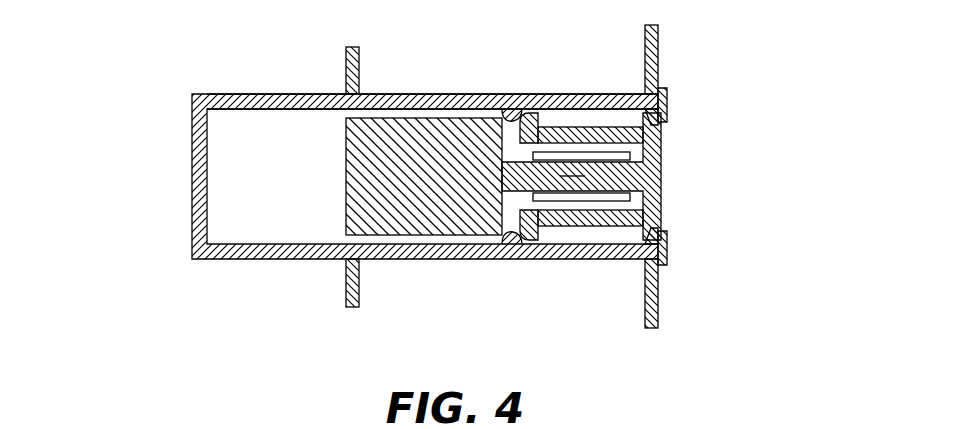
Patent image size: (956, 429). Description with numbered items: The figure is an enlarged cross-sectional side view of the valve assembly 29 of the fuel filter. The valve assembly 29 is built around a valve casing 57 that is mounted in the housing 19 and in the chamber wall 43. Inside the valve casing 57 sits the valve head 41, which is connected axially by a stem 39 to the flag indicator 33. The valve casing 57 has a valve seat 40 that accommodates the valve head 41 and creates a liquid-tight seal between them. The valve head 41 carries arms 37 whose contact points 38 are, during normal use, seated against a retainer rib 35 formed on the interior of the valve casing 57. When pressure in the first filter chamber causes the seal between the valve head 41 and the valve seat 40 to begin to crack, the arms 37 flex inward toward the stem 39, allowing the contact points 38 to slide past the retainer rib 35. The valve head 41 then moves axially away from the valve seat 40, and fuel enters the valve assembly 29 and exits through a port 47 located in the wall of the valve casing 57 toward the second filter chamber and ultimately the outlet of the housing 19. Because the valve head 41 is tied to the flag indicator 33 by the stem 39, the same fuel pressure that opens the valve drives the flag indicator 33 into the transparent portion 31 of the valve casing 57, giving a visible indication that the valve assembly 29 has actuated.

The valve assembly 29 is at (141, 128).
The transparent portion 31 is at (200, 250).
The valve casing 57 is at (379, 104).
The housing 19 is at (346, 60).
The flag indicator 33 is at (418, 128).
The retainer rib 35 is at (511, 98).
The contact points 38 is at (548, 115).
The arms 37 is at (587, 135).
The stem 39 is at (572, 180).
The valve head 41 is at (661, 185).
The port 47 is at (649, 153).
The valve seat 40 is at (666, 108).
The chamber wall 43 is at (659, 46).